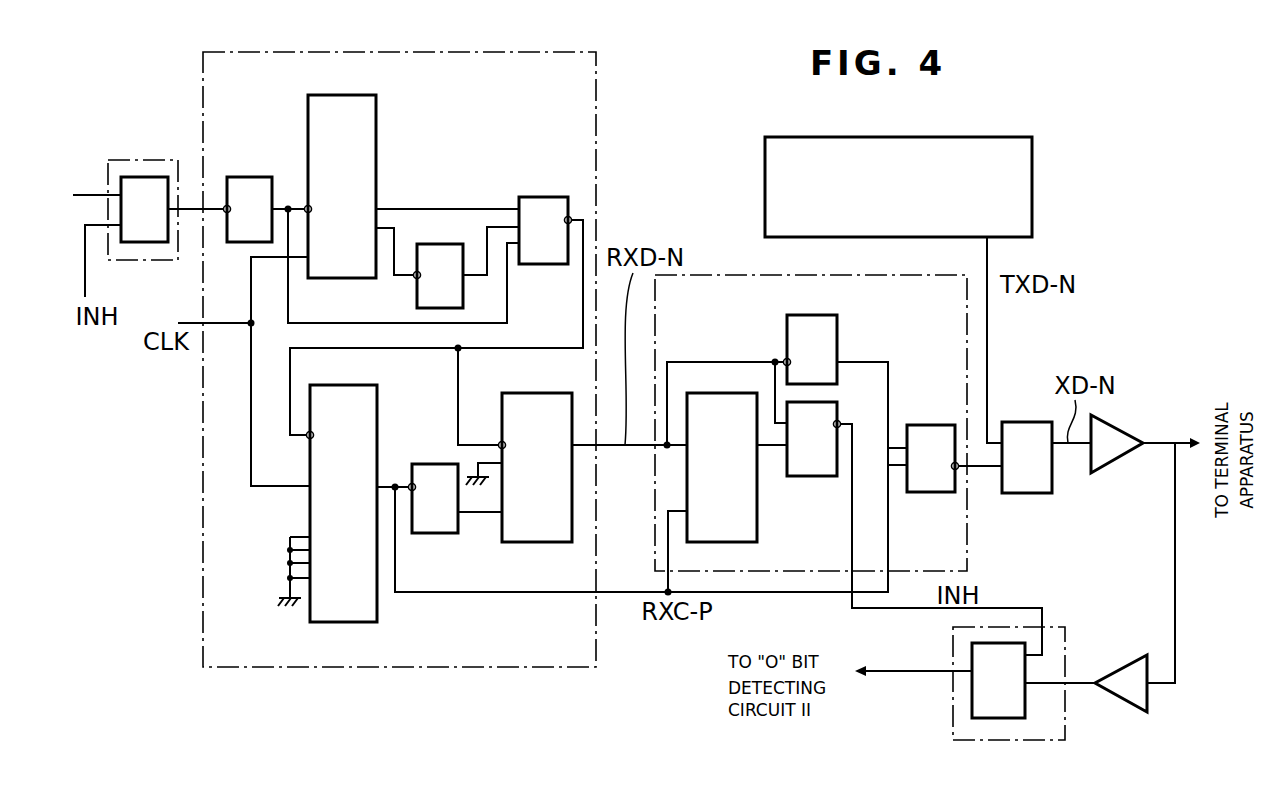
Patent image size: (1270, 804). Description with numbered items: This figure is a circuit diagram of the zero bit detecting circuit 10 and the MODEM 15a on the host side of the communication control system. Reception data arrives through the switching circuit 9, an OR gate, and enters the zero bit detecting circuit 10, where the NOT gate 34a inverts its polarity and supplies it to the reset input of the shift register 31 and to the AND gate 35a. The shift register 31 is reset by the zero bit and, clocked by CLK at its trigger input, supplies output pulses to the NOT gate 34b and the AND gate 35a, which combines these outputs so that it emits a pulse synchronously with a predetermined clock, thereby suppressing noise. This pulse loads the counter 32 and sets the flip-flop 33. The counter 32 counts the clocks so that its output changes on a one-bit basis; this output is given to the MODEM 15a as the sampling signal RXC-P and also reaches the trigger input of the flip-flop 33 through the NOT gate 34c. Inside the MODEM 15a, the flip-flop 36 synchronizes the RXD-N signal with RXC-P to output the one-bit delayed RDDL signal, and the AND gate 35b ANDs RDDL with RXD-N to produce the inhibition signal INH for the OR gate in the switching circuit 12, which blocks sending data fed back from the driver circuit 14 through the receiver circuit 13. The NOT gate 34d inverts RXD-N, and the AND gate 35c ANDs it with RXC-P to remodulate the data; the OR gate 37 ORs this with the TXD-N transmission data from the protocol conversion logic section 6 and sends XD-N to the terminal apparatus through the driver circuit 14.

The protocol conversion logic section 6 is at (1032, 182).
The switching circuit 9 is at (150, 160).
The "0" bit detecting circuit 10 is at (295, 667).
The switching circuit 12 is at (953, 689).
The receiver circuit 13 is at (1128, 660).
The driver circuit 14 is at (1117, 463).
The modulator/demodulator circuit 15a is at (728, 273).
The shift register 31 is at (376, 108).
The counter 32 is at (357, 385).
The flip-flop 33 is at (545, 393).
The NOT gate 34a is at (253, 177).
The NOT gate 34b is at (417, 293).
The NOT gate 34c is at (432, 464).
The NOT gate 34d is at (803, 315).
The AND gate 35a is at (540, 197).
The AND gate 35b is at (837, 403).
The AND gate 35c is at (935, 425).
The flip-flop 36 is at (757, 508).
The OR gate 37 is at (1030, 422).